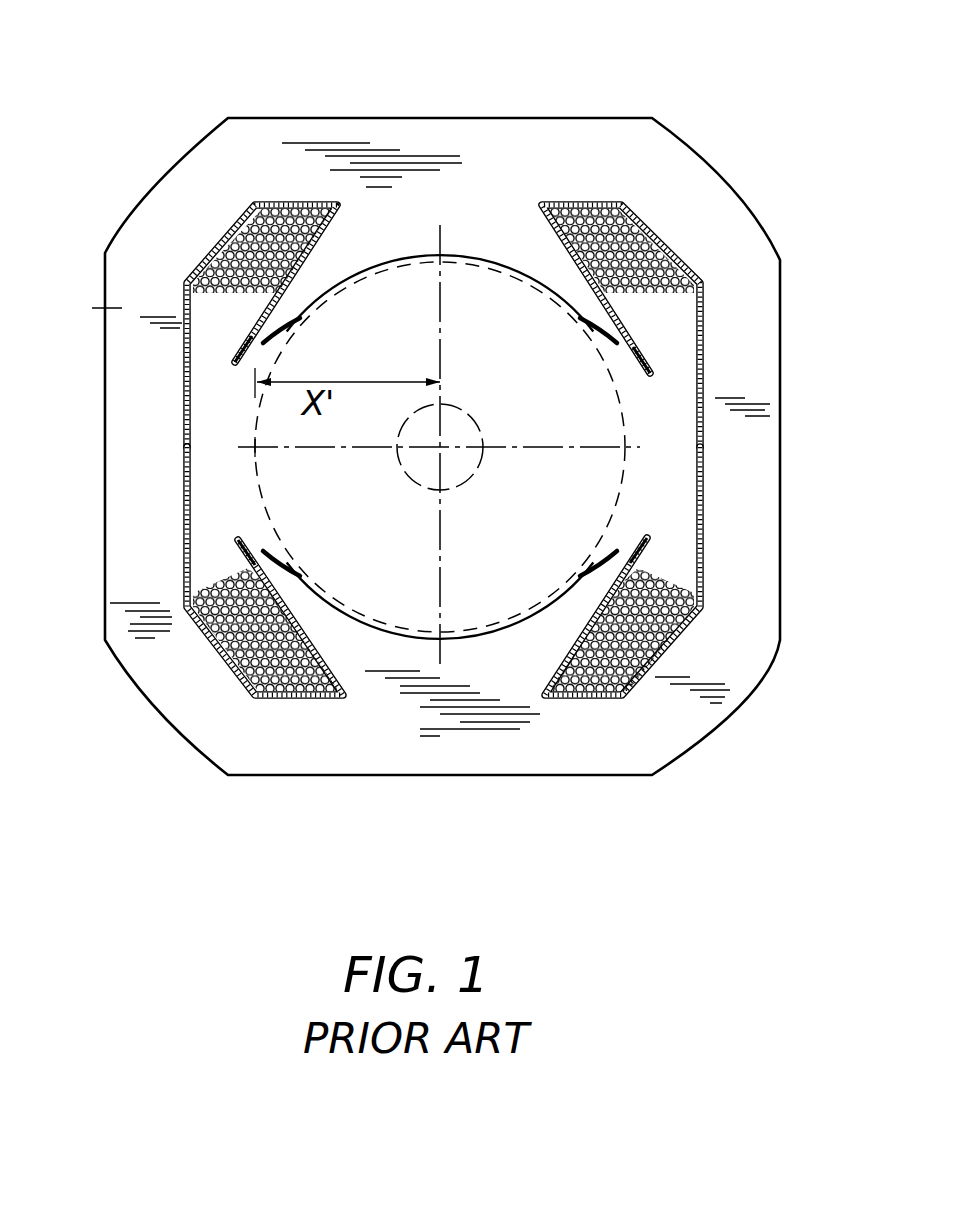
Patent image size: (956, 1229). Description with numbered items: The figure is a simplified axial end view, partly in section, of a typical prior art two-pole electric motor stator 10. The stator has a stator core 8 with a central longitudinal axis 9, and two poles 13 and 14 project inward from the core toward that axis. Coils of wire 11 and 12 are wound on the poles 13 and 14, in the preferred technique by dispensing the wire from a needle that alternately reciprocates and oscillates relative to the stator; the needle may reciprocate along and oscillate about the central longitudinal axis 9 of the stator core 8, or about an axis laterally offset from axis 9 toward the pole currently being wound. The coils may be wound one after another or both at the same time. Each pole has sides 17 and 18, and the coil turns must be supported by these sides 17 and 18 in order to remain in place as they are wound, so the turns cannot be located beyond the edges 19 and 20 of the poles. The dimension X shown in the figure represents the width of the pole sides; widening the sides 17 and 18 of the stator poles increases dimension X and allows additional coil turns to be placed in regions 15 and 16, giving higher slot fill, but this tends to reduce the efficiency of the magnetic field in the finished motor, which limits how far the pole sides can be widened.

The stator core 8 is at (765, 477).
The central longitudinal axis 9 is at (440, 448).
The two-pole electric motor stator 10 is at (620, 78).
The coil of wire 11 is at (637, 220).
The coil of wire 12 is at (647, 677).
The pole 13 is at (397, 247).
The pole 14 is at (420, 648).
The region 15 is at (200, 312).
The region 16 is at (217, 576).
The side of stator pole 17 is at (303, 290).
The side of stator pole 18 is at (300, 598).
The edge of pole 19 is at (252, 355).
The edge of pole 20 is at (255, 537).